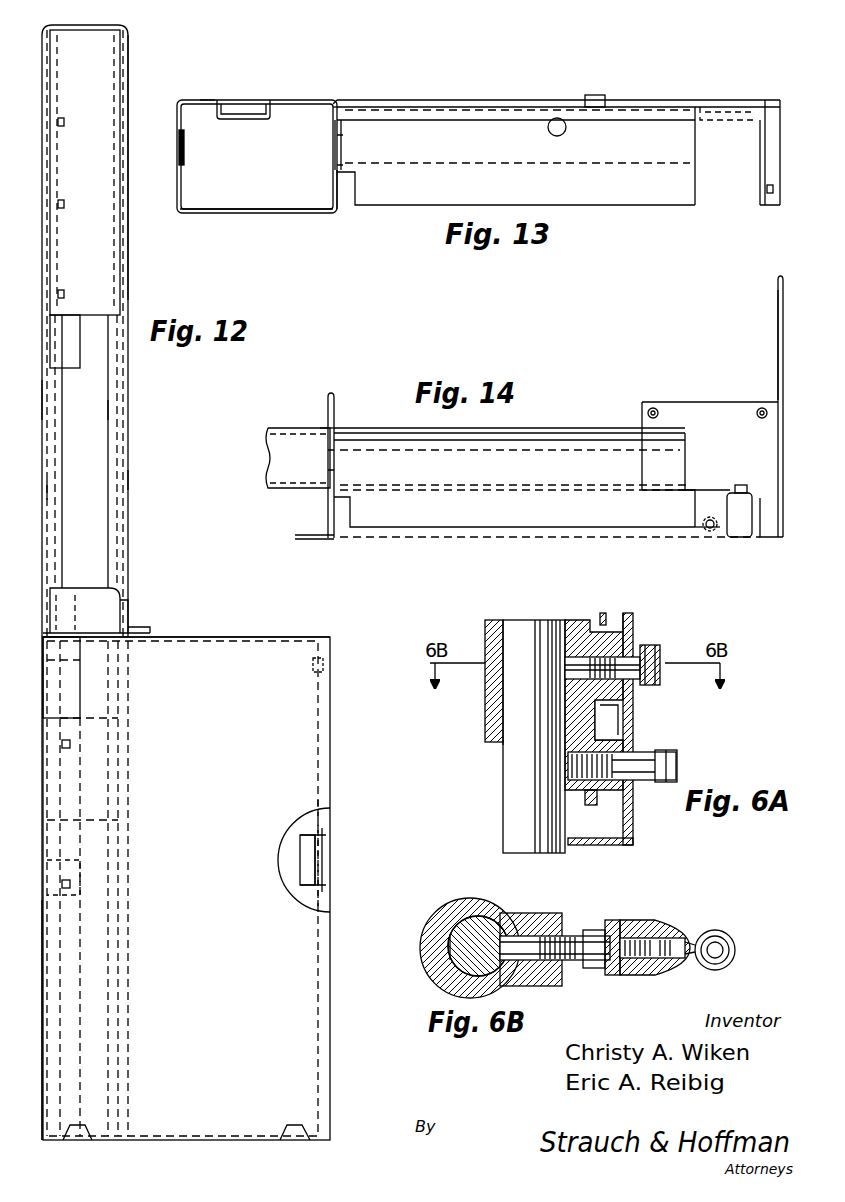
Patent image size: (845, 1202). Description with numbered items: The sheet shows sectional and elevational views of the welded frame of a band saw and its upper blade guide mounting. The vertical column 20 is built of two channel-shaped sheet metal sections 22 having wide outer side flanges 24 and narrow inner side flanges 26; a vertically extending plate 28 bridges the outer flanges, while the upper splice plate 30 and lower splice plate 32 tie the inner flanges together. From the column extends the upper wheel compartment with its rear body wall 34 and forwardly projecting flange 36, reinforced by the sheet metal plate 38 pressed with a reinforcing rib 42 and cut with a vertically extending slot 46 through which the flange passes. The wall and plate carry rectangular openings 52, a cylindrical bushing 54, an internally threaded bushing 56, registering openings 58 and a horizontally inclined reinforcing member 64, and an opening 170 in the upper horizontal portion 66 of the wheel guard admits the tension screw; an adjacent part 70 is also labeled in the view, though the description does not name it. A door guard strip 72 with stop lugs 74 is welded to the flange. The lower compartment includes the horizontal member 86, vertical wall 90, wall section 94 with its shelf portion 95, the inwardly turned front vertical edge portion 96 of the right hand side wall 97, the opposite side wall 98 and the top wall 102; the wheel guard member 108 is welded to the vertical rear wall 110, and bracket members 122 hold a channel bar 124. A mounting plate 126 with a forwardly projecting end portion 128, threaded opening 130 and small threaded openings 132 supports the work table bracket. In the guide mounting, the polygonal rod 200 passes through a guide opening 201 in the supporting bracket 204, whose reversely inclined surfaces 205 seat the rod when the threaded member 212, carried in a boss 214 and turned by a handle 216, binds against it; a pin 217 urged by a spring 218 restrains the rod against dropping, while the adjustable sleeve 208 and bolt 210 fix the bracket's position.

In FIG. 12, the vertical column 20 is at (131, 478).
In FIG. 13, the vertical column 20 is at (210, 100).
In FIG. 12, the rolled sheet metal sections 22 is at (47, 402).
In FIG. 13, the rolled sheet metal sections 22 is at (273, 214).
In FIG. 14, the rolled sheet metal sections 22 is at (318, 540).
In FIG. 13, the outer side flanges 24 is at (177, 184).
In FIG. 12, the inner side flanges 26 is at (112, 412).
In FIG. 13, the inner side flanges 26 is at (338, 208).
In FIG. 13, the vertically extending plate 28 is at (184, 146).
In FIG. 12, the upper splice plate 30 is at (98, 447).
In FIG. 13, the upper splice plate 30 is at (333, 158).
In FIG. 14, the lower splice plate 32 is at (328, 469).
In FIG. 12, the rear sheet metal body wall 34 is at (128, 80).
In FIG. 13, the rear sheet metal body wall 34 is at (410, 100).
In FIG. 6A, the rear sheet metal body wall 34 is at (650, 604).
In FIG. 13, the forwardly projecting flange 36 is at (336, 105).
In FIG. 13, the sheet metal plate 38 is at (300, 107).
In FIG. 6A, the sheet metal plate 38 is at (603, 613).
In FIG. 13, the reinforcing rib 42 is at (256, 118).
In FIG. 13, the vertically extending slot 46 is at (330, 108).
In FIG. 13, the rectangular openings 52 is at (500, 103).
In FIG. 13, the cylindrical bushing 54 is at (603, 97).
In FIG. 6A, the internally threaded bushing 56 is at (610, 800).
In FIG. 6A, the registering openings 58 is at (626, 613).
In FIG. 13, the reinforcing member 64 is at (722, 118).
In FIG. 13, the upper horizontal portion 66 is at (640, 156).
In FIG. 12, the slide block 70 is at (68, 352).
In FIG. 13, the slide block 70 is at (625, 206).
In FIG. 12, the door guard strip 72 is at (90, 270).
In FIG. 13, the door guard strip 72 is at (782, 205).
In FIG. 12, the stop lugs 74 is at (63, 205).
In FIG. 13, the stop lugs 74 is at (767, 189).
In FIG. 14, the horizontal member 86 is at (286, 430).
In FIG. 12, the vertical wall 90 is at (80, 805).
In FIG. 12, the vertical wall section 94 is at (43, 962).
In FIG. 14, the vertical wall section 94 is at (456, 538).
In FIG. 12, the horizontal flange or shelf portion 95 is at (67, 887).
In FIG. 14, the inwardly turned front vertical edge portion 96 is at (752, 527).
In FIG. 12, the right hand side wall 97 is at (248, 752).
In FIG. 14, the right hand side wall 97 is at (778, 292).
In FIG. 14, the opposite side wall 98 is at (330, 400).
In FIG. 12, the top wall 102 is at (214, 637).
In FIG. 14, the top wall 102 is at (332, 400).
In FIG. 12, the wheel guard member 108 is at (72, 618).
In FIG. 14, the wheel guard member 108 is at (540, 480).
In FIG. 12, the vertical rear wall 110 is at (128, 603).
In FIG. 14, the vertical rear wall 110 is at (585, 438).
In FIG. 12, the bracket members 122 is at (322, 834).
In FIG. 12, the channel bar 124 is at (300, 862).
In FIG. 12, the mounting plate 126 is at (136, 632).
In FIG. 14, the mounting plate 126 is at (752, 457).
In FIG. 14, the forwardly projecting end portion 128 is at (705, 506).
In FIG. 14, the threaded opening 130 is at (710, 532).
In FIG. 14, the threaded openings 132 is at (760, 408).
In FIG. 13, the opening 170 is at (549, 127).
In FIG. 6A, the rod 200 is at (527, 638).
In FIG. 6B, the rod 200 is at (490, 930).
In FIG. 6A, the guide opening 201 is at (497, 742).
In FIG. 6B, the guide opening 201 is at (445, 950).
In FIG. 6A, the supporting bracket 204 is at (490, 690).
In FIG. 6B, the supporting bracket 204 is at (460, 910).
In FIG. 6B, the reversely inclined surfaces 205 is at (476, 906).
In FIG. 6A, the adjustable sleeve 208 is at (642, 790).
In FIG. 6A, the bolt 210 is at (660, 775).
In FIG. 6A, the member 212 is at (657, 658).
In FIG. 6B, the member 212 is at (600, 976).
In FIG. 6A, the boss 214 is at (632, 705).
In FIG. 6B, the handle 216 is at (684, 940).
In FIG. 6A, the pin 217 is at (583, 631).
In FIG. 6B, the pin 217 is at (535, 913).
In FIG. 6A, the spring 218 is at (648, 656).
In FIG. 6B, the spring 218 is at (563, 923).